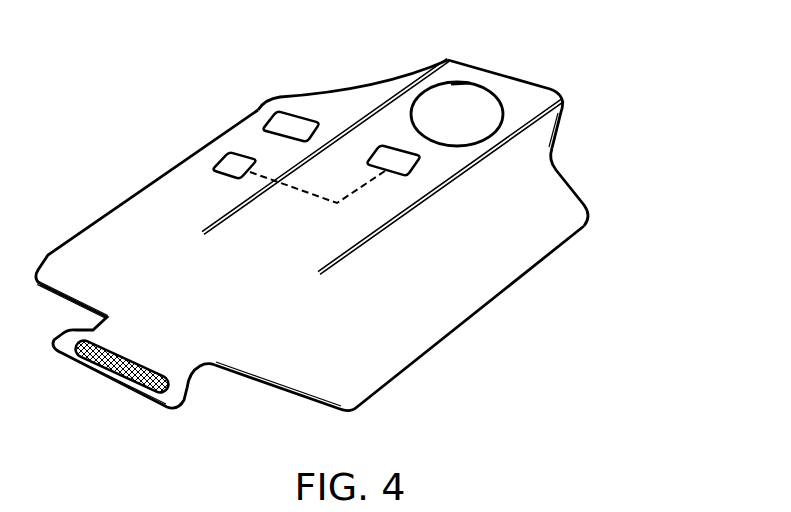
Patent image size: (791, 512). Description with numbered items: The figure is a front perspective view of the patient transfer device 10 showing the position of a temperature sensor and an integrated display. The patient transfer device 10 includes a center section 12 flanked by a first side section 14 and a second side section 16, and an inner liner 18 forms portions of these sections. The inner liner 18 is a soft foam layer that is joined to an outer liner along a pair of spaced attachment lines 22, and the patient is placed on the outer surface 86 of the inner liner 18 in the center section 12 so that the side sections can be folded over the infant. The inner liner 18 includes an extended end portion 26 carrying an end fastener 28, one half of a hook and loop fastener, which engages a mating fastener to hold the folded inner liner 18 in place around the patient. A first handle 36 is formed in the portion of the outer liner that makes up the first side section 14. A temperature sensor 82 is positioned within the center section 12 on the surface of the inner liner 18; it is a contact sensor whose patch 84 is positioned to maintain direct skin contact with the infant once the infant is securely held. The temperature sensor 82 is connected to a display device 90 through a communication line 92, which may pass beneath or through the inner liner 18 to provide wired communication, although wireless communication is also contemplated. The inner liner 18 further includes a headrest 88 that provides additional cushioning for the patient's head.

The patient transfer device 10 is at (211, 115).
The center section 12 is at (538, 98).
The first side section 14 is at (323, 110).
The second side section 16 is at (606, 152).
The inner liner 18 is at (391, 353).
The attachment lines 22 is at (222, 215).
The end portion 26 is at (167, 400).
The end fastener 28 is at (103, 368).
The first handle 36 is at (287, 122).
The temperature sensor 82 is at (396, 173).
The patch 84 is at (410, 163).
The outer surface 86 is at (128, 233).
The headrest 88 is at (468, 100).
The display device 90 is at (222, 152).
The communication line 92 is at (300, 193).